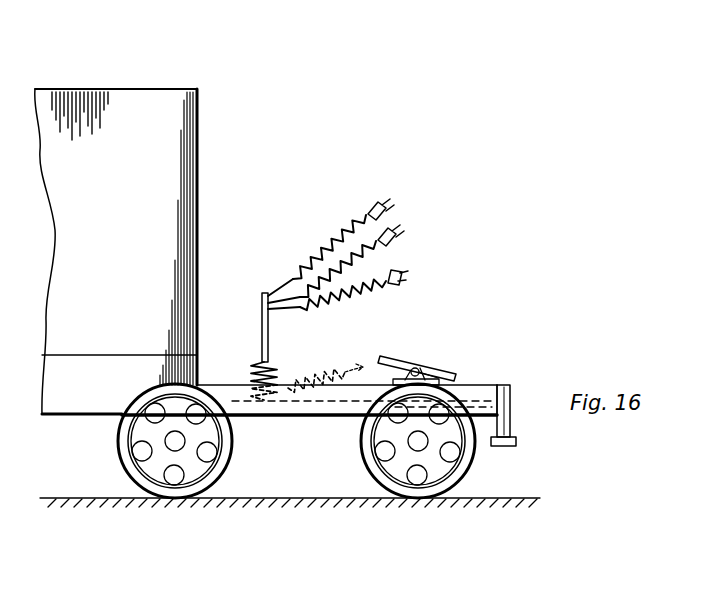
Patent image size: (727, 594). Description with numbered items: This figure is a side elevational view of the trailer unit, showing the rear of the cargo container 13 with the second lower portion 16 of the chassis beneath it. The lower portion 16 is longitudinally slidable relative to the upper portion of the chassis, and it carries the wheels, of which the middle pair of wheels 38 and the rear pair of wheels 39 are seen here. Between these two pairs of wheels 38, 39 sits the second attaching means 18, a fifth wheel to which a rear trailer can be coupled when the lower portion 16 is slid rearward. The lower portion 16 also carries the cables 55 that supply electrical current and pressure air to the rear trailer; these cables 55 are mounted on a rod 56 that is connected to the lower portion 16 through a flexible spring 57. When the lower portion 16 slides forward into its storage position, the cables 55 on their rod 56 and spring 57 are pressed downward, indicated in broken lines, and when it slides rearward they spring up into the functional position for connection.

The cargo container 13 is at (127, 100).
The second lower portion 16 is at (483, 390).
The second attaching means 18 is at (428, 365).
The middle pair of wheels 38 is at (160, 490).
The rear pair of wheels 39 is at (404, 494).
The cables 55 is at (297, 266).
The rod 56 is at (262, 325).
The flexible spring 57 is at (254, 378).